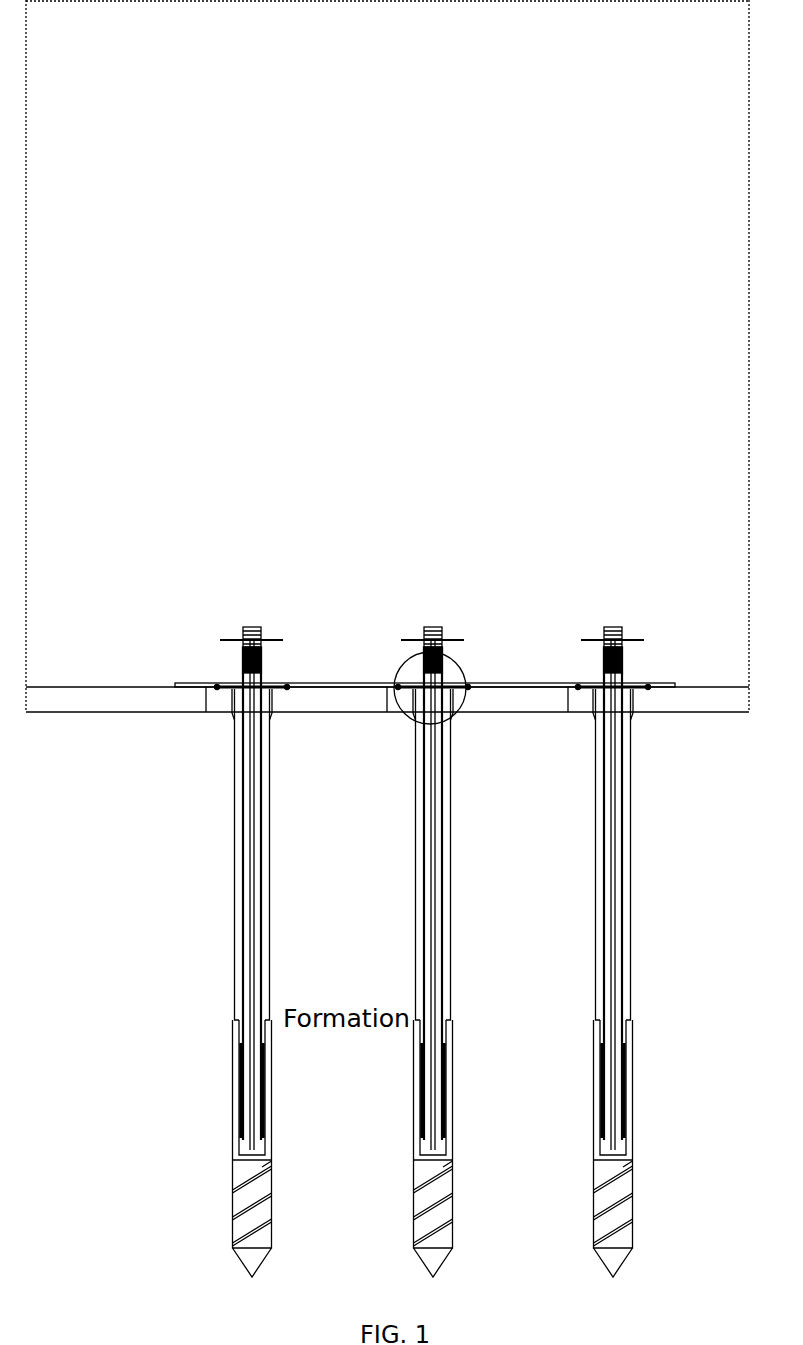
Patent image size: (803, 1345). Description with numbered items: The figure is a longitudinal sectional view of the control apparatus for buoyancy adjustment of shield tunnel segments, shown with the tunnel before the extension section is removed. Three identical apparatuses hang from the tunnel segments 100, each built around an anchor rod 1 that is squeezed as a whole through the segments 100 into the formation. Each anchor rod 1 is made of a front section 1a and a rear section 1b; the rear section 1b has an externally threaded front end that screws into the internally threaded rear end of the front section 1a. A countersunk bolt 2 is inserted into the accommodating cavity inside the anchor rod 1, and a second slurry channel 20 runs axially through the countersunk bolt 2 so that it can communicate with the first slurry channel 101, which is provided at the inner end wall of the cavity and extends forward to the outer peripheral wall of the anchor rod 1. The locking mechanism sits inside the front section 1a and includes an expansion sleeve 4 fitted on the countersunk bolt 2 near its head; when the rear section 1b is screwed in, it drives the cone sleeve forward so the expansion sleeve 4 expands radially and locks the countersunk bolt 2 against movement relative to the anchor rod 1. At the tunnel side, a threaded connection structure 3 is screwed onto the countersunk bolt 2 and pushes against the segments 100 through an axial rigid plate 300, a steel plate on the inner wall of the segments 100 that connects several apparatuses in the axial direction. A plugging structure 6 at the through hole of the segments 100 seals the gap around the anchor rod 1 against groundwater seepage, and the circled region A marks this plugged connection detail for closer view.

The tunnel segments 100 is at (113, 700).
The axial rigid plate 300 is at (354, 683).
The threaded connection structure 3 is at (253, 627).
The plugging structure 6 is at (281, 685).
The detail region A is at (456, 713).
The countersunk bolt 2 is at (246, 855).
The second slurry channel 20 is at (250, 790).
The anchor rod 1 is at (437, 983).
The rear section 1b is at (235, 984).
The front section 1a is at (431, 1148).
The expansion sleeve 4 is at (265, 1110).
The first slurry channel 101 is at (235, 1168).